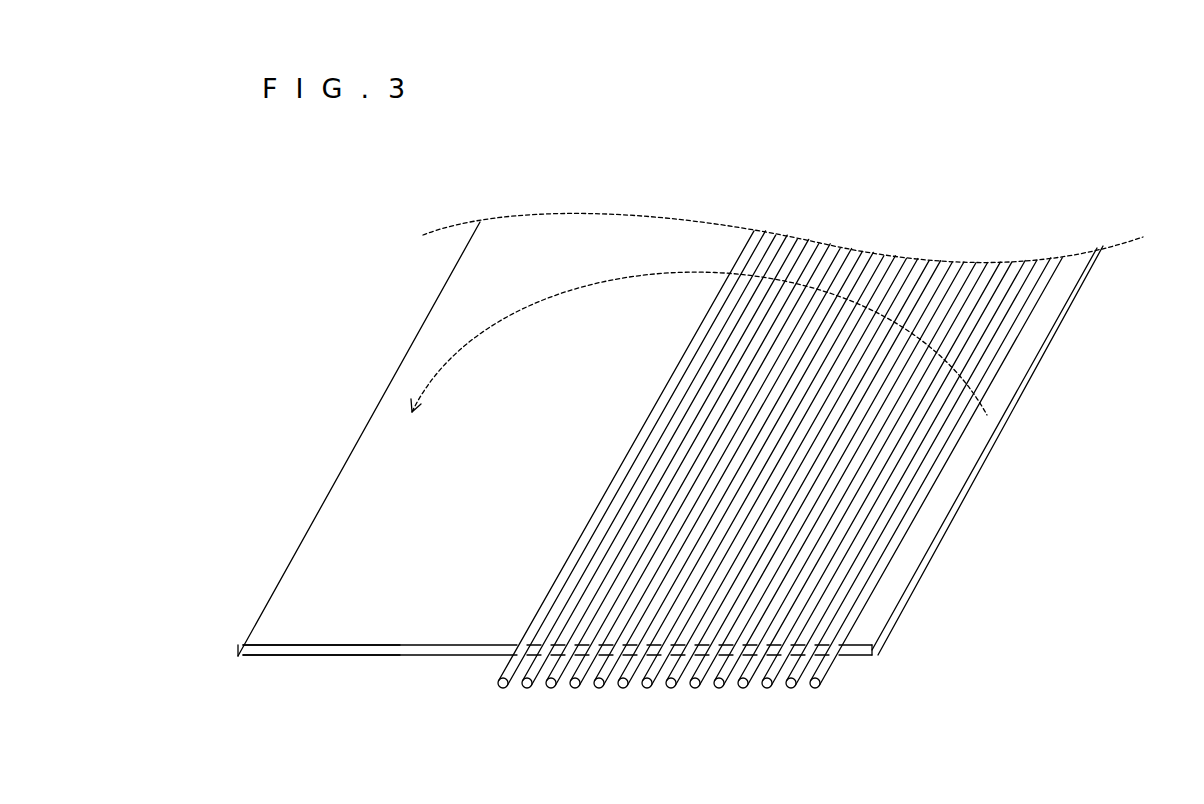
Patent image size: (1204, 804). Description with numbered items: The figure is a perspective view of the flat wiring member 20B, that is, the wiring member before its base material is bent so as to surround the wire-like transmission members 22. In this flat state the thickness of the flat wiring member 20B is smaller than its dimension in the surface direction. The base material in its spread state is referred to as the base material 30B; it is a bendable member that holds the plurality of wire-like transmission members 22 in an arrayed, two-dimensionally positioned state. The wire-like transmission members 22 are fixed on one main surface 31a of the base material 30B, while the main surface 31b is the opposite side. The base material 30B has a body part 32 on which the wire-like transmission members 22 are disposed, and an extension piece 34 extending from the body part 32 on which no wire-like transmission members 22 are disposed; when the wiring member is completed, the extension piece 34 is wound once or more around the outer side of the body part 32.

The flat wiring member 20B is at (668, 465).
The base material 30B is at (668, 470).
The main surface 31a is at (268, 633).
The main surface 31b is at (266, 657).
The extension piece 34 is at (380, 622).
The body part 32 is at (862, 632).
The wire-like transmission members 22 is at (743, 690).